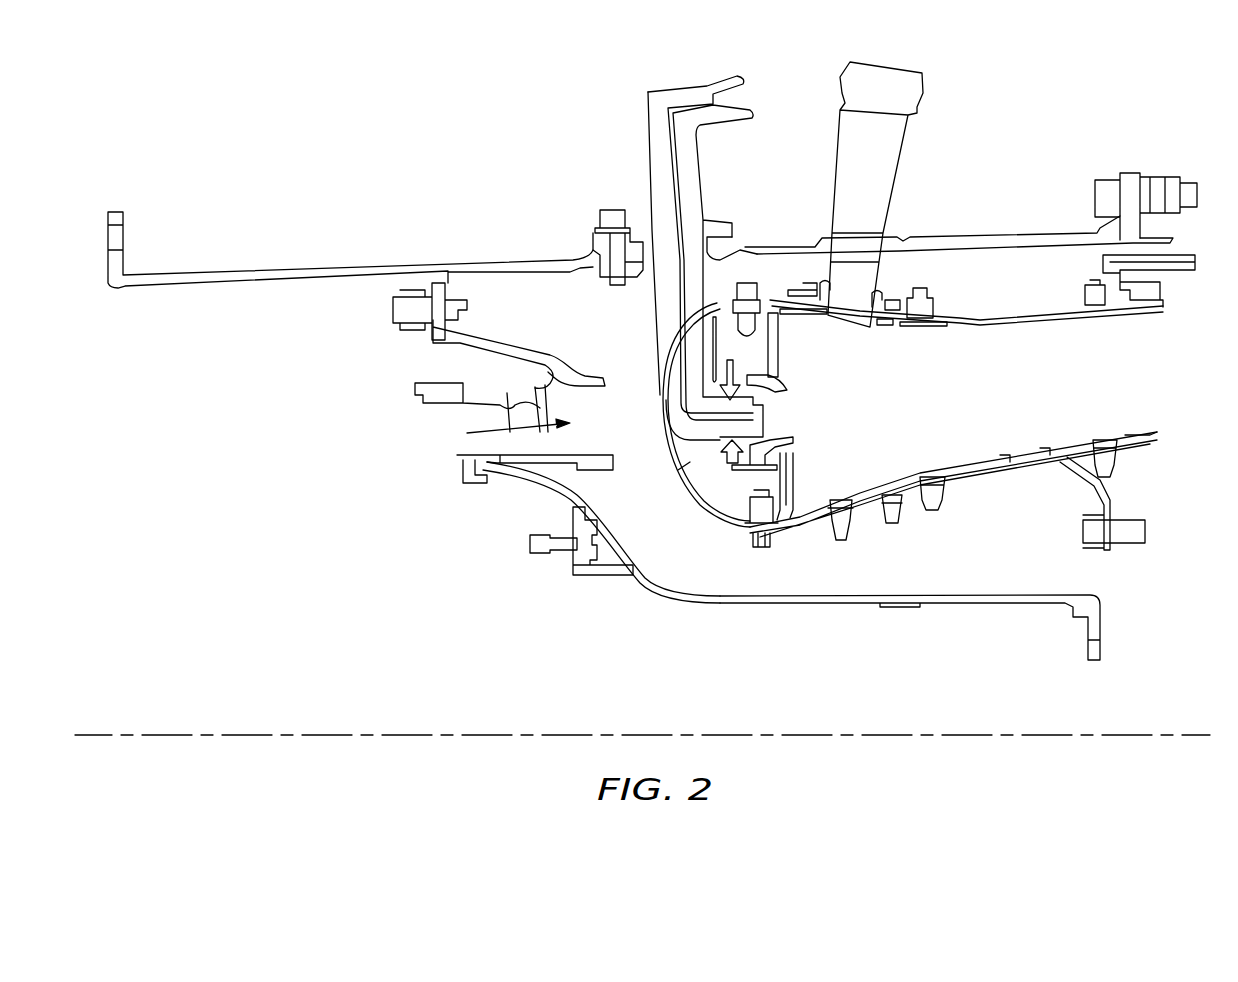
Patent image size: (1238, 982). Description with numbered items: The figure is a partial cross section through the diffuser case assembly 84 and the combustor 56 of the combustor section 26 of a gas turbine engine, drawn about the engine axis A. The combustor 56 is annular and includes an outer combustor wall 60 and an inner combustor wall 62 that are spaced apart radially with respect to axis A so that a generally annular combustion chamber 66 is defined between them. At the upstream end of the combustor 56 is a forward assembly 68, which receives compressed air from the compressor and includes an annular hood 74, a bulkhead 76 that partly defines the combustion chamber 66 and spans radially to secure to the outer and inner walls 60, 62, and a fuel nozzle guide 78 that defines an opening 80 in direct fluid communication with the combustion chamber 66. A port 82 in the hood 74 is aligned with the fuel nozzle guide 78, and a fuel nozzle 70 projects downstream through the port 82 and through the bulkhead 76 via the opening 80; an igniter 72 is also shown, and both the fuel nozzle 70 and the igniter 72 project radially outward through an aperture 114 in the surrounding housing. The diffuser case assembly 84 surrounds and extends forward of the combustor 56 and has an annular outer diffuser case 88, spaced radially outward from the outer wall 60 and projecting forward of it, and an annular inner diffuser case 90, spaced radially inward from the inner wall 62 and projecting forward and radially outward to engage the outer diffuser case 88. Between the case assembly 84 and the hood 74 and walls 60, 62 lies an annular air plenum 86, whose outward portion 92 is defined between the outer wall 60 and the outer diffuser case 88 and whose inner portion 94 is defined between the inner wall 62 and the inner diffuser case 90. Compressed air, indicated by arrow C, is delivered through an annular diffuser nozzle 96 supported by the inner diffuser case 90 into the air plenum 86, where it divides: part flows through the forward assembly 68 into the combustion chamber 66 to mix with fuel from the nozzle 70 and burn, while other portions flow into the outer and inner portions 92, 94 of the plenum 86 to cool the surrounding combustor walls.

The combustor section 26 is at (1083, 151).
The combustor 56 is at (973, 504).
The outer combustor wall 60 is at (1033, 318).
The inner combustor wall 62 is at (1000, 447).
The combustion chamber 66 is at (964, 403).
The forward assembly 68 is at (707, 517).
The fuel nozzle 70 is at (648, 155).
The igniter 72 is at (918, 128).
The annular hood 74 is at (690, 488).
The bulkhead 76 is at (796, 480).
The fuel nozzle guide 78 is at (788, 428).
The opening 80 is at (785, 400).
The port 82 is at (667, 466).
The diffuser case assembly 84 is at (652, 598).
The air plenum 86 is at (626, 358).
The outer diffuser case 88 is at (246, 268).
The inner diffuser case 90 is at (715, 603).
The outward portion of the air plenum 92 is at (1010, 293).
The inner portion of the air plenum 94 is at (931, 571).
The annular diffuser nozzle 96 is at (550, 365).
The aperture 114 is at (733, 262).
The axis A is at (330, 735).
The compressed air flow C is at (468, 440).